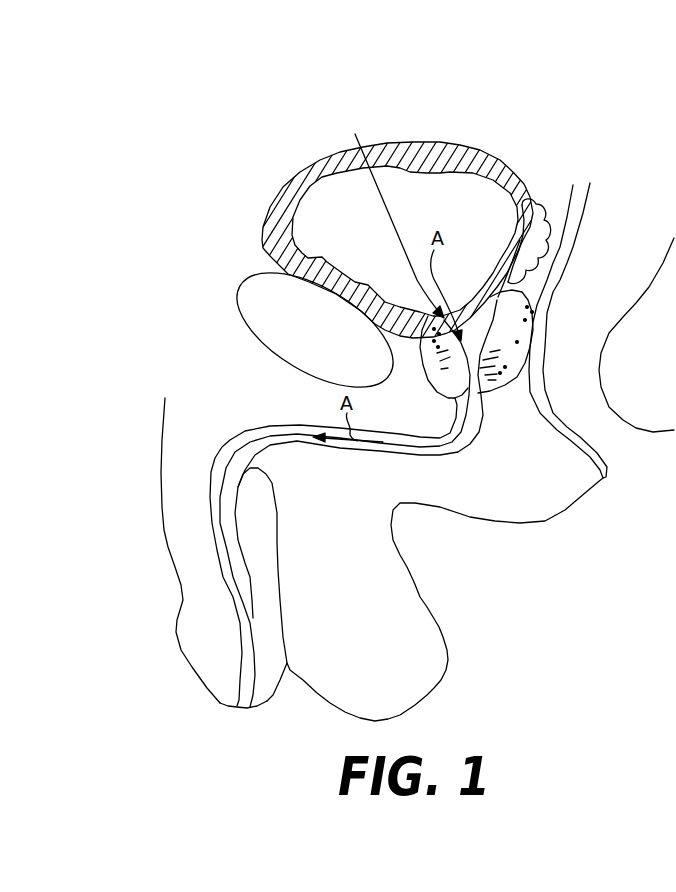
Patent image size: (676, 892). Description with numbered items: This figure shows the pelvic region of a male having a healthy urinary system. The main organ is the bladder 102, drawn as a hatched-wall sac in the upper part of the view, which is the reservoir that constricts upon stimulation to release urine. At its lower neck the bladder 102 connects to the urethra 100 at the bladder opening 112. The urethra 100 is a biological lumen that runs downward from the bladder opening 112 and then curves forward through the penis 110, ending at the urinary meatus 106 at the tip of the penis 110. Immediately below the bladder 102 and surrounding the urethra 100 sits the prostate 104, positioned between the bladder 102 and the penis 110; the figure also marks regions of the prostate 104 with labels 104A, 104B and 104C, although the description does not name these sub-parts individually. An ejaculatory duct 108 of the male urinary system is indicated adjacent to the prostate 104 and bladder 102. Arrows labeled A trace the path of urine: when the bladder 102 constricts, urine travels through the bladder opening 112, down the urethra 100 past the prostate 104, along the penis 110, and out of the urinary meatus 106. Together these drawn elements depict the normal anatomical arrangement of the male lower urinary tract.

The urethra 100 is at (418, 450).
The bladder 102 is at (446, 199).
The prostate 104 is at (501, 389).
The prostate lobe 104A is at (452, 363).
The prostate lobe 104B is at (523, 324).
The seminal vesicle 104C is at (537, 262).
The urinary meatus 106 is at (240, 707).
The ejaculatory duct 108 is at (497, 326).
The penis 110 is at (180, 586).
The bladder opening 112 is at (392, 214).